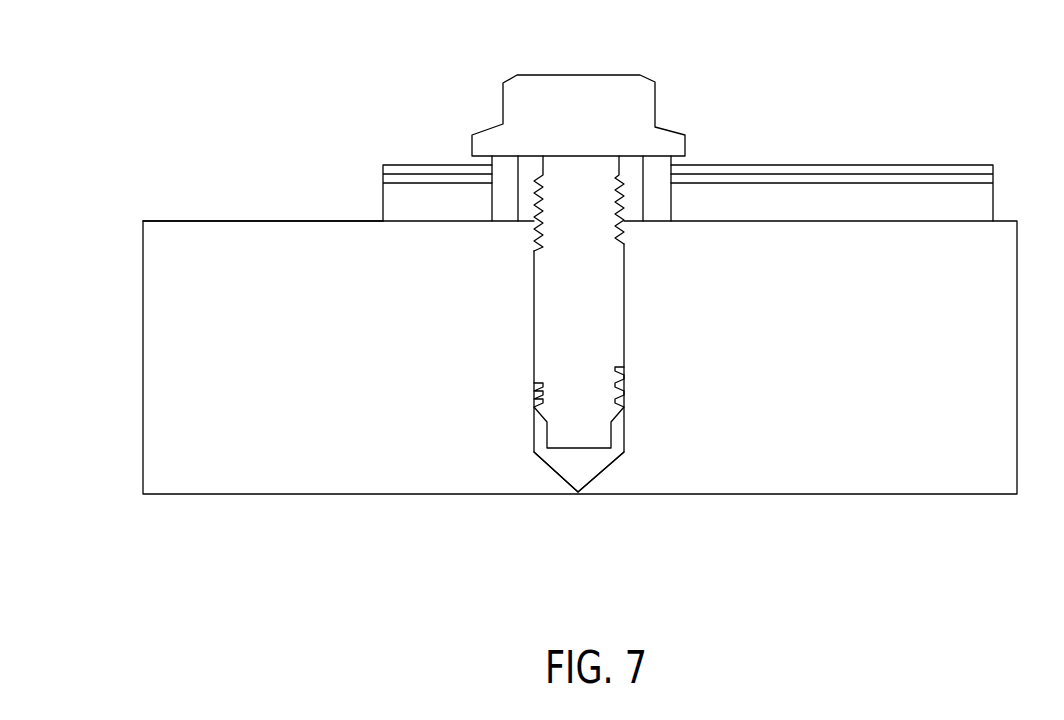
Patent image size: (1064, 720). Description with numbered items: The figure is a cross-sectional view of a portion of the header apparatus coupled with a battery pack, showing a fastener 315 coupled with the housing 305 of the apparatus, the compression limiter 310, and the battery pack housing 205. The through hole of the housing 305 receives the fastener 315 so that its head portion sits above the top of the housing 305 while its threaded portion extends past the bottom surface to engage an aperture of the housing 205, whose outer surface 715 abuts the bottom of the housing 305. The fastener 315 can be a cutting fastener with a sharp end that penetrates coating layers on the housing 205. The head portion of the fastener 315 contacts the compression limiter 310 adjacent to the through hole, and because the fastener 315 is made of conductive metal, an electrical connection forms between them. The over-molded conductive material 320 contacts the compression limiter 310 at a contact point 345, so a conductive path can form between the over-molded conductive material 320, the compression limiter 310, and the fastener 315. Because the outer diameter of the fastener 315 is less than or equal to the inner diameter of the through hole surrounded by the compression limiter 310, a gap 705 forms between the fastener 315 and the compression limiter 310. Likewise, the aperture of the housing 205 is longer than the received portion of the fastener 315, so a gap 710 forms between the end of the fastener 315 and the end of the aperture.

The housing 205 is at (155, 382).
The housing 305 is at (395, 142).
The compression limiter 310 is at (500, 188).
The fastener 315 is at (583, 170).
The over-molded conductive material 320 is at (985, 178).
The contact point 345 is at (675, 177).
The gap 705 is at (628, 177).
The gap 710 is at (578, 477).
The surface 715 is at (163, 221).